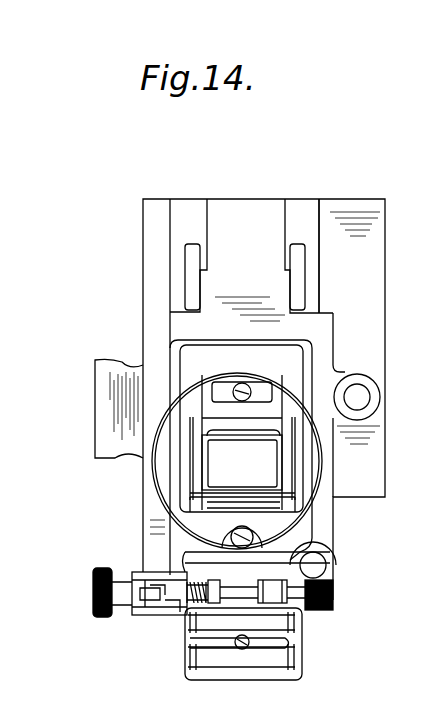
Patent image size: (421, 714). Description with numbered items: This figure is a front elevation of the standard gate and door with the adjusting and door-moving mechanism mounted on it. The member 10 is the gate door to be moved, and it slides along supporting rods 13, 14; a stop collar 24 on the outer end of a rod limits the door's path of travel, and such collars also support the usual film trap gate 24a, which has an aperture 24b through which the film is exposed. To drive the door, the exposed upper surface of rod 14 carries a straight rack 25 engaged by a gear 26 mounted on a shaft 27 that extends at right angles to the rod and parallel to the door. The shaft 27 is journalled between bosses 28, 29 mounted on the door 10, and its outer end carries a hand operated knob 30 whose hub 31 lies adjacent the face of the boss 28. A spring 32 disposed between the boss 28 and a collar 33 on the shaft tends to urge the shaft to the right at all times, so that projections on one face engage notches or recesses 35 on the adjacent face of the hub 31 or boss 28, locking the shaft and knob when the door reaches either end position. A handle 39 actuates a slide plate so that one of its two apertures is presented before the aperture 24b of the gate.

The member 10 is at (310, 333).
The rod 13 is at (357, 396).
The rod 14 is at (318, 565).
The collar 24 is at (140, 600).
The film trap gate 24a is at (342, 256).
The aperture 24b is at (208, 483).
The rack 25 is at (330, 572).
The gear 26 is at (318, 612).
The shaft 27 is at (268, 550).
The boss 28 is at (172, 606).
The boss 29 is at (300, 545).
The knob 30 is at (103, 568).
The hub 31 is at (135, 588).
The spring 32 is at (190, 578).
The collar 33 is at (255, 560).
The notches or recesses 35 is at (150, 592).
The handle 39 is at (100, 360).